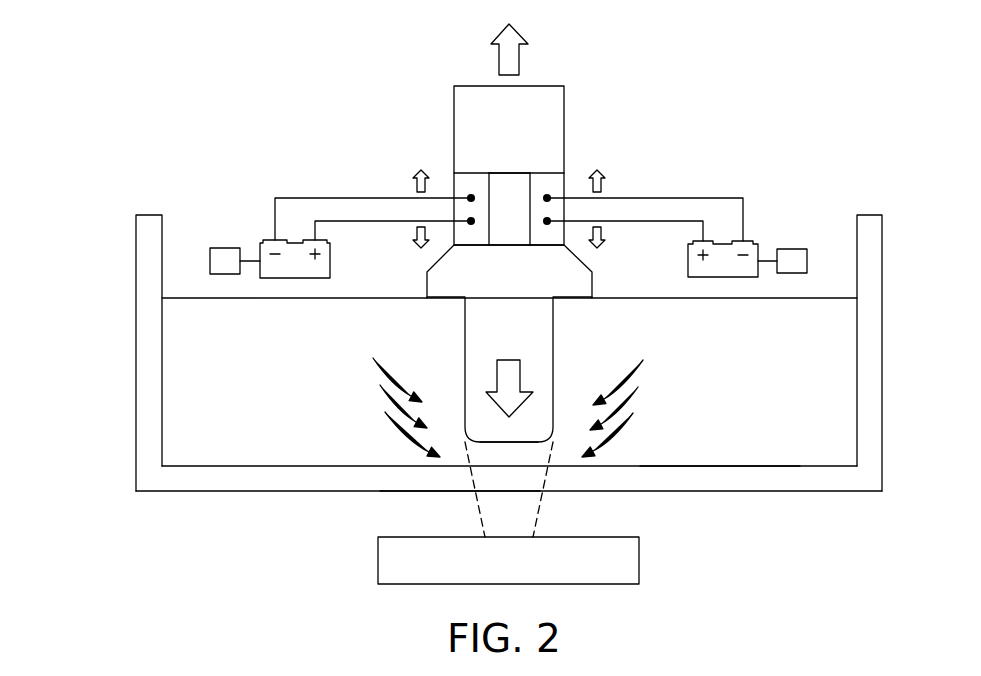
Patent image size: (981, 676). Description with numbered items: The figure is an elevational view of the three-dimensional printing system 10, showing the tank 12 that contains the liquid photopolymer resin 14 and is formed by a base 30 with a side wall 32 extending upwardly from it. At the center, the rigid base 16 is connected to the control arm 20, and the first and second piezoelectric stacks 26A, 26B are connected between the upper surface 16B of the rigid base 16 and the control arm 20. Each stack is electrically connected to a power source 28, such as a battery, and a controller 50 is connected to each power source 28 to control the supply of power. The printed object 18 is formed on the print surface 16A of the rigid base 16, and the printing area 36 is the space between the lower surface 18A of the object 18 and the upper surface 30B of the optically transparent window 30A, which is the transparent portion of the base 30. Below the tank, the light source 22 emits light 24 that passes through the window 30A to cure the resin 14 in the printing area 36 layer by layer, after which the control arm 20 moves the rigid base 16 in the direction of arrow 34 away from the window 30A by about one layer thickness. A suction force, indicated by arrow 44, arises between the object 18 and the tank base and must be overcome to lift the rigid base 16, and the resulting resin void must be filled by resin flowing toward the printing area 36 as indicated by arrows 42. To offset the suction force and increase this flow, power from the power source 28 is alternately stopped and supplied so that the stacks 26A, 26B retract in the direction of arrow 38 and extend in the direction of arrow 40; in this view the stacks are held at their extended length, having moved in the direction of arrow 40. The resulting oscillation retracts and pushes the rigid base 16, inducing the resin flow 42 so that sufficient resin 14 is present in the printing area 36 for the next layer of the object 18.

The three-dimensional printing system 10 is at (797, 143).
The tank 12 is at (472, 381).
The liquid photopolymer resin 14 is at (358, 297).
The rigid base 16 is at (592, 283).
The print surface 16A is at (443, 298).
The upper surface 16B is at (505, 245).
The printed object 18 is at (553, 330).
The lower surface 18A is at (495, 442).
The control arm 20 is at (564, 117).
The light source 22 is at (639, 560).
The light 24 is at (540, 510).
The first piezoelectric stack 26A is at (564, 185).
The second piezoelectric stack 26B is at (454, 185).
The power source 28 is at (262, 245).
The base 30 is at (232, 491).
The optically transparent window 30A is at (456, 491).
The upper surface 30B is at (720, 466).
The side wall 32 is at (112, 353).
The arrow 34 is at (498, 59).
The printing area 36 is at (518, 453).
The arrow 38 is at (412, 185).
The arrow 40 is at (412, 233).
The arrows 42 is at (643, 362).
The arrow 44 is at (520, 375).
The controller 50 is at (210, 258).